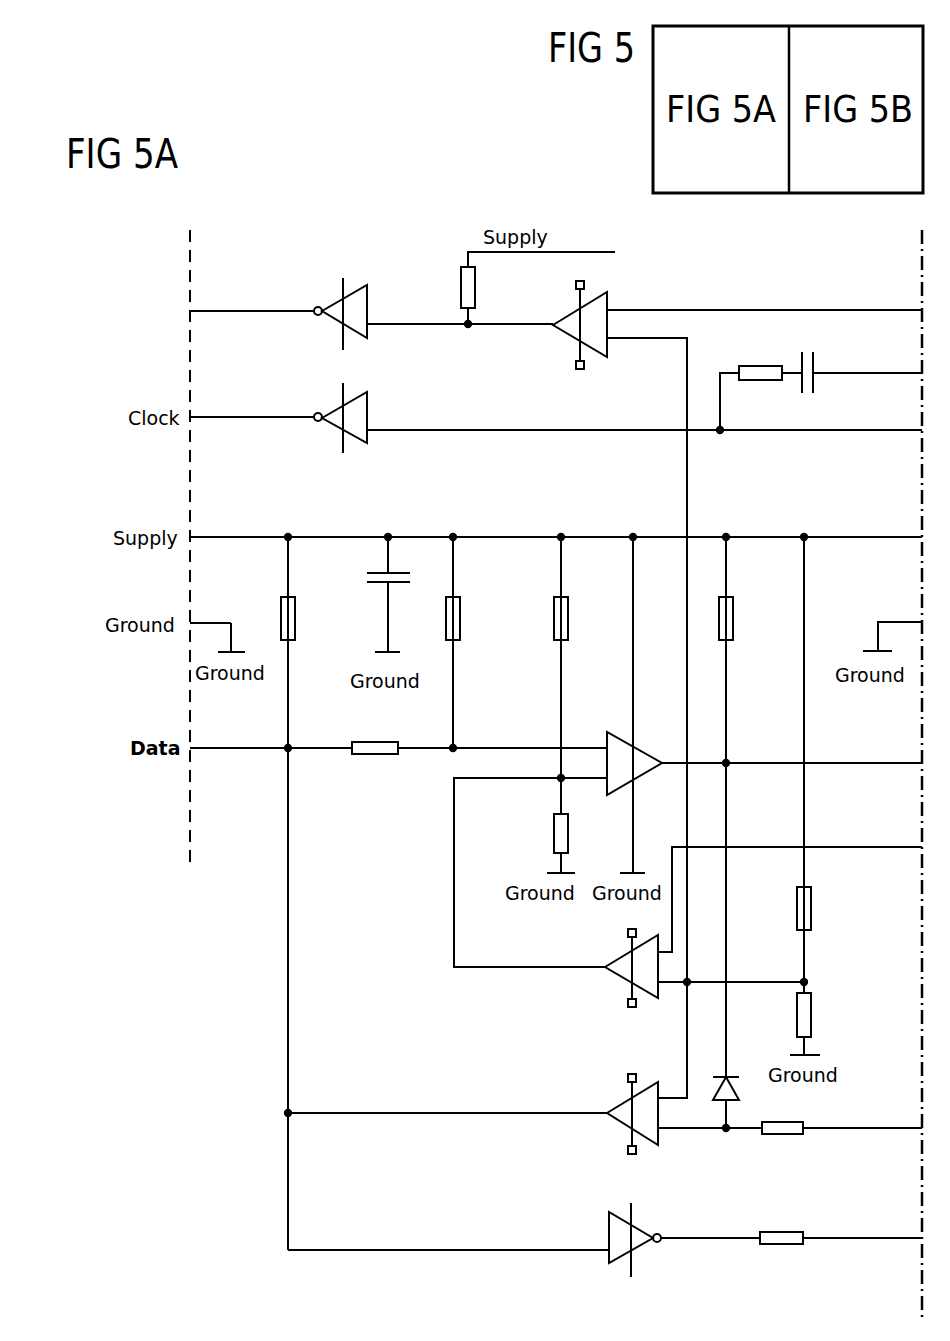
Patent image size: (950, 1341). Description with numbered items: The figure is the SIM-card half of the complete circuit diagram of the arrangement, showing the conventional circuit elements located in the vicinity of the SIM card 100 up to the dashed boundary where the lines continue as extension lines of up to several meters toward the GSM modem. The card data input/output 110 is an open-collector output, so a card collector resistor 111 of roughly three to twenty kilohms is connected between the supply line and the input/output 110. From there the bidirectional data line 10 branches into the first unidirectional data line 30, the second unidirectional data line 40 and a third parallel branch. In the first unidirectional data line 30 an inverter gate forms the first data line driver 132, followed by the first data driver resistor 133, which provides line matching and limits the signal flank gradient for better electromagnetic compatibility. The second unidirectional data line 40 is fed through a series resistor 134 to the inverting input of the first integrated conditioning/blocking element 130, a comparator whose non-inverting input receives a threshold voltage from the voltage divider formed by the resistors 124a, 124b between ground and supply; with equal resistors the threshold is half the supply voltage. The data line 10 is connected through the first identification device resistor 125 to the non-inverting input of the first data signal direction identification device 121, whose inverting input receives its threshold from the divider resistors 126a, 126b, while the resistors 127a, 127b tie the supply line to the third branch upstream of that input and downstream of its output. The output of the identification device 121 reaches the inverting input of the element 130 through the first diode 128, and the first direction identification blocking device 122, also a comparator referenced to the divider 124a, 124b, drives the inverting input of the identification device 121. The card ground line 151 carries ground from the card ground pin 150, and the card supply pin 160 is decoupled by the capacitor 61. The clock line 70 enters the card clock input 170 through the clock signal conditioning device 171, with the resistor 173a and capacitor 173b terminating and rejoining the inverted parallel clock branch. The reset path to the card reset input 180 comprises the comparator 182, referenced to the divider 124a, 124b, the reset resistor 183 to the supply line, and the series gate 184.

The SIM card 100 is at (128, 260).
The bidirectional data line 10 is at (232, 752).
The first unidirectional data line 30 is at (433, 1249).
The second unidirectional data line 40 is at (430, 1112).
The clock line 70 is at (270, 418).
The card data input/output 110 is at (192, 747).
The card collector resistor 111 is at (295, 622).
The capacitor 61 is at (398, 590).
The first data signal direction identification device 121 is at (648, 750).
The first direction identification blocking device 122 is at (618, 985).
The voltage divider resistor 124a is at (811, 908).
The voltage divider resistor 124b is at (811, 1018).
The first identification device resistor 125 is at (372, 756).
The voltage divider resistor 126a is at (554, 605).
The voltage divider resistor 126b is at (554, 833).
The resistor 127a is at (460, 640).
The resistor 127b is at (733, 640).
The first diode 128 is at (732, 1075).
The first integrated conditioning/blocking element 130 is at (620, 1130).
The first data line driver 132 is at (640, 1255).
The first data driver resistor 133 is at (790, 1244).
The series resistor 134 is at (790, 1134).
The card ground pin 150 is at (190, 620).
The card ground line 151 is at (212, 622).
The card supply pin 160 is at (192, 536).
The card clock input 170 is at (192, 416).
The clock signal conditioning device 171 is at (335, 408).
The resistor 173a is at (760, 366).
The capacitor 173b is at (818, 368).
The card reset input 180 is at (192, 310).
The comparator 182 is at (565, 340).
The reset resistor 183 is at (461, 292).
The gate 184 is at (335, 300).